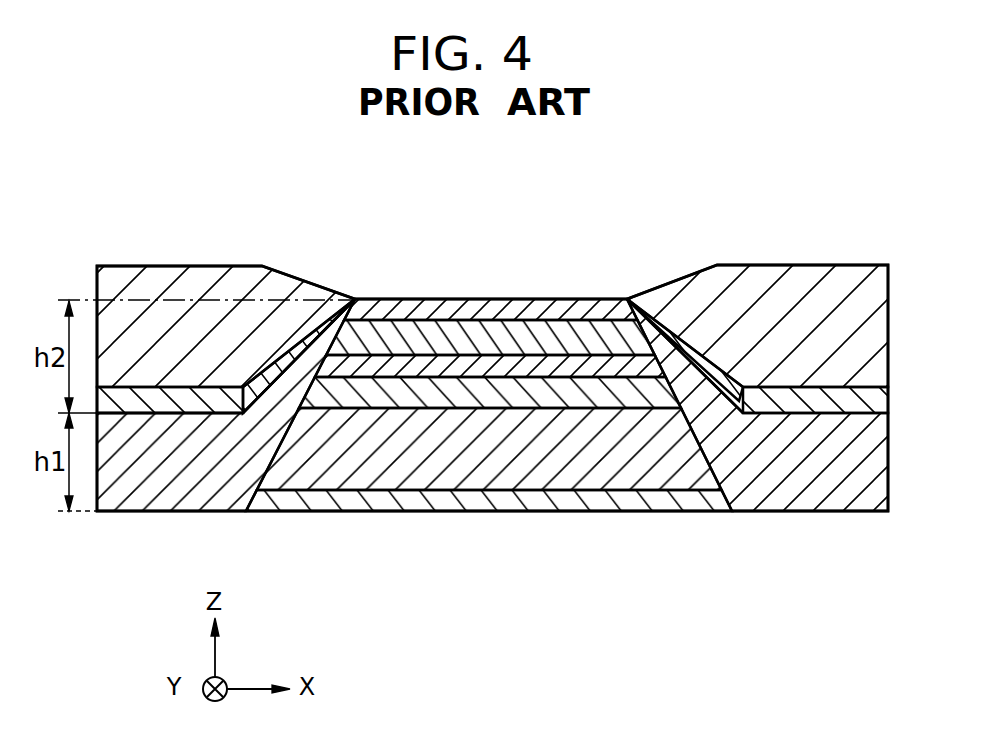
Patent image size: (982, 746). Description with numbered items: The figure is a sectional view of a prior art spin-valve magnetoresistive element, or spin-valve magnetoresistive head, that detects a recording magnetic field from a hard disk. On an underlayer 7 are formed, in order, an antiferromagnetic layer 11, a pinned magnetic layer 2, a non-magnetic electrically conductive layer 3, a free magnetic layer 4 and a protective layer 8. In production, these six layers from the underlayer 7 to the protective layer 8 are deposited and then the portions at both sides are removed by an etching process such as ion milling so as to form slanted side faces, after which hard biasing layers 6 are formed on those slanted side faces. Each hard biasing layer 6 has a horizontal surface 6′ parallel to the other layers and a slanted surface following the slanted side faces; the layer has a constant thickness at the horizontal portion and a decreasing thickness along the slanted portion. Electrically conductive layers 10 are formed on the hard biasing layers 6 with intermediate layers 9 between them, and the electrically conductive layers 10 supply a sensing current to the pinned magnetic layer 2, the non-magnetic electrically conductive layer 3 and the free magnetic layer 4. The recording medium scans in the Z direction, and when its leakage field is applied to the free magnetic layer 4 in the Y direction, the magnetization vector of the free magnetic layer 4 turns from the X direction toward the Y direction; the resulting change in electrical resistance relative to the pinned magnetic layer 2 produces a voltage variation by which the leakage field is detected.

The pinned magnetic layer 2 is at (597, 390).
The non-magnetic electrically conductive layer 3 is at (560, 367).
The free magnetic layer 4 is at (510, 337).
The hard biasing layer 6 is at (167, 492).
The horizontal surface 6′ is at (200, 403).
The underlayer 7 is at (448, 500).
The protective layer 8 is at (450, 306).
The intermediate layer 9 is at (123, 397).
The electrically conductive layer 10 is at (187, 282).
The antiferromagnetic layer 11 is at (563, 462).